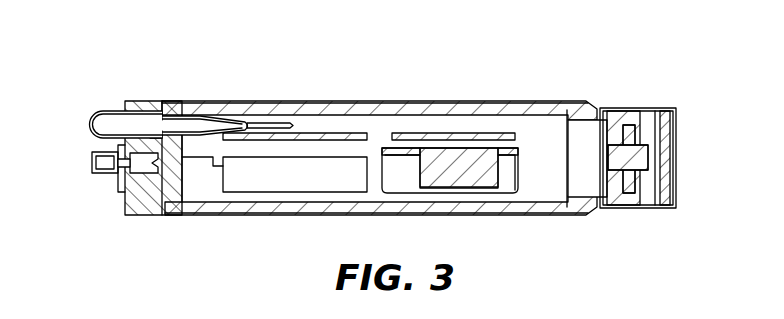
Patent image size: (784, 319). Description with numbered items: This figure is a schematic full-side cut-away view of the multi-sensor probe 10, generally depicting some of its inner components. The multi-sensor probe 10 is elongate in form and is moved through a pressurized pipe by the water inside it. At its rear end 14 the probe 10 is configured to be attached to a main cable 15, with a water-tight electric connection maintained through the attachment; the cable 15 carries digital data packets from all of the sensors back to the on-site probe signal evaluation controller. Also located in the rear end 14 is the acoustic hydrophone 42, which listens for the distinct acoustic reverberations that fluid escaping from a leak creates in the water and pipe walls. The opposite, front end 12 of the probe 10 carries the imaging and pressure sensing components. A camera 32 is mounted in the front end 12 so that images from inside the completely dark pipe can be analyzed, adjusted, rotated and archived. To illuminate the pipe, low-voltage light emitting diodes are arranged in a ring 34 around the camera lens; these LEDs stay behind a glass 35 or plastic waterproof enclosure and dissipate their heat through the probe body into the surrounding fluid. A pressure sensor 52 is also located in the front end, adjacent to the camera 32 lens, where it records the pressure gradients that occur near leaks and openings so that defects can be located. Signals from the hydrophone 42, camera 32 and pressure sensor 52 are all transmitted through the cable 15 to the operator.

The multi-sensor probe 10 is at (509, 68).
The front end 12 is at (658, 108).
The rear end 14 is at (147, 100).
The main cable 15 is at (92, 159).
The camera 32 is at (587, 175).
The ring 34 is at (628, 125).
The glass 35 is at (675, 146).
The acoustic hydrophone 42 is at (108, 122).
The pressure sensor 52 is at (647, 173).